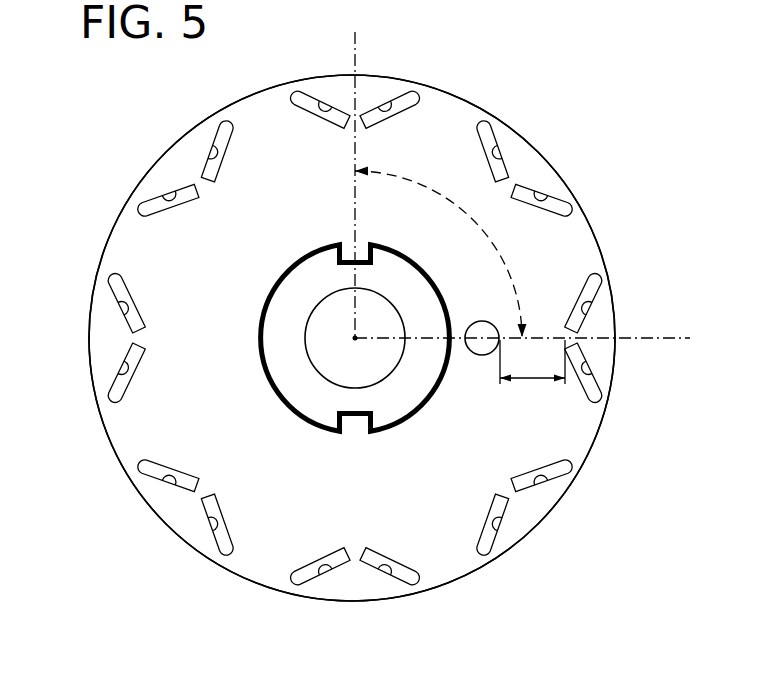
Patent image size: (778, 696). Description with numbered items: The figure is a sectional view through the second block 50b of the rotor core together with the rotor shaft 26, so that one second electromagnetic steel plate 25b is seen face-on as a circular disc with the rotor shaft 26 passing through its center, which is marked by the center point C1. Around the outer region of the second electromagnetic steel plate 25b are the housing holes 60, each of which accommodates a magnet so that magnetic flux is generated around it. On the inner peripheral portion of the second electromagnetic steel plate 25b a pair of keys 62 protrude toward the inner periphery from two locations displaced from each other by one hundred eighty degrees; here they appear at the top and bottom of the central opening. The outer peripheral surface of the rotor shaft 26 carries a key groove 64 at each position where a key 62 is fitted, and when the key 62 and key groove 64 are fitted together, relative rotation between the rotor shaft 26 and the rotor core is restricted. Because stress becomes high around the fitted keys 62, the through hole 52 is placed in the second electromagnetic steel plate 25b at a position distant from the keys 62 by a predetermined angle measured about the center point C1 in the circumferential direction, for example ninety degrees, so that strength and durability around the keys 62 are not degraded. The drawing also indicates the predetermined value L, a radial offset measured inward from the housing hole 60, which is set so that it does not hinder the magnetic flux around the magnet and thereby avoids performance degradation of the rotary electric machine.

The second electromagnetic steel plate 25b is at (448, 120).
The second block 50b is at (352, 338).
The rotor shaft 26 is at (280, 345).
The through hole 52 is at (478, 322).
The housing hole 60 is at (327, 103).
The key 62 is at (350, 247).
The key groove 64 is at (363, 248).
The central axis C1 is at (351, 340).
The predetermined value L is at (532, 362).